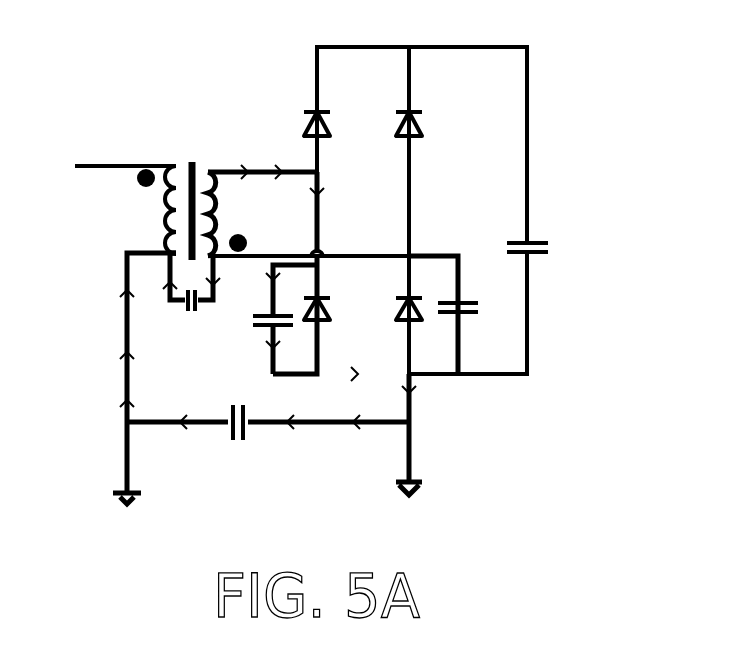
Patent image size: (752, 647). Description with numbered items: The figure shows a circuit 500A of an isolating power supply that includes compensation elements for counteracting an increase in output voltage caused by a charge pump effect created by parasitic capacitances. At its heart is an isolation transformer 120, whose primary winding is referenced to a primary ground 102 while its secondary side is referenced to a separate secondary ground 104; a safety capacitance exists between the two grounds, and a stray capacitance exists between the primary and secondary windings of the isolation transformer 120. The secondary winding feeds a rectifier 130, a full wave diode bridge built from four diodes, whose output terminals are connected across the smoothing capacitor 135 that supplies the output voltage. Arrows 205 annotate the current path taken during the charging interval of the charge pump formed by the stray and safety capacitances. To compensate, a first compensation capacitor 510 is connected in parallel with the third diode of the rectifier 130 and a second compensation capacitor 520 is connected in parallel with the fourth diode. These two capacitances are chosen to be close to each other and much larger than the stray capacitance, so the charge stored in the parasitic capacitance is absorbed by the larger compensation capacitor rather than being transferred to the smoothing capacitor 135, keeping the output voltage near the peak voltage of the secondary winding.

The circuit 500A is at (684, 50).
The isolation transformer 120 is at (191, 148).
The rectifier 130 is at (294, 87).
The smoothing capacitor 135 is at (541, 226).
The arrows 205 is at (108, 350).
The first compensation capacitor 510 is at (272, 319).
The second compensation capacitor 520 is at (471, 322).
The primary ground 102 is at (105, 495).
The secondary ground 104 is at (388, 490).